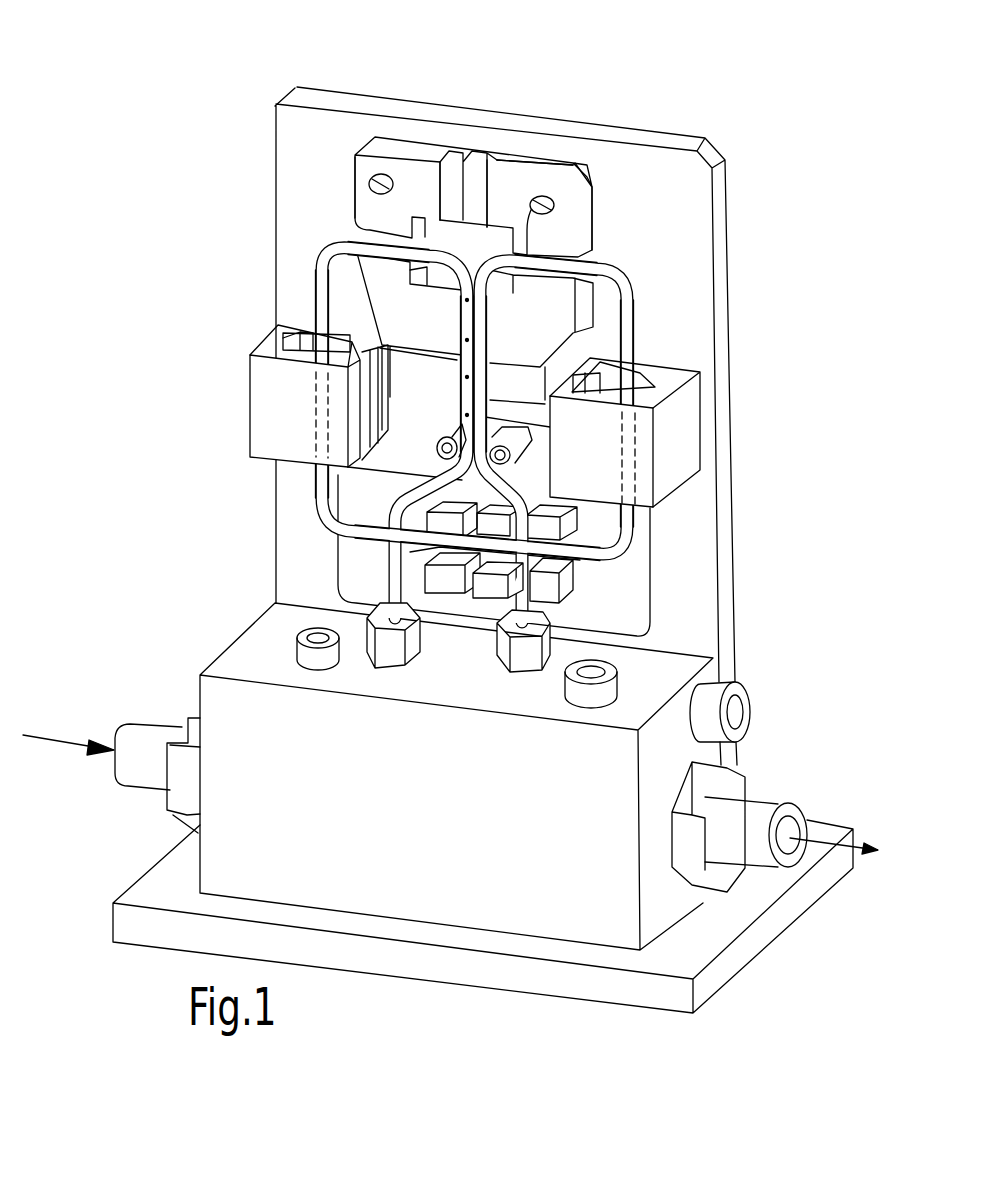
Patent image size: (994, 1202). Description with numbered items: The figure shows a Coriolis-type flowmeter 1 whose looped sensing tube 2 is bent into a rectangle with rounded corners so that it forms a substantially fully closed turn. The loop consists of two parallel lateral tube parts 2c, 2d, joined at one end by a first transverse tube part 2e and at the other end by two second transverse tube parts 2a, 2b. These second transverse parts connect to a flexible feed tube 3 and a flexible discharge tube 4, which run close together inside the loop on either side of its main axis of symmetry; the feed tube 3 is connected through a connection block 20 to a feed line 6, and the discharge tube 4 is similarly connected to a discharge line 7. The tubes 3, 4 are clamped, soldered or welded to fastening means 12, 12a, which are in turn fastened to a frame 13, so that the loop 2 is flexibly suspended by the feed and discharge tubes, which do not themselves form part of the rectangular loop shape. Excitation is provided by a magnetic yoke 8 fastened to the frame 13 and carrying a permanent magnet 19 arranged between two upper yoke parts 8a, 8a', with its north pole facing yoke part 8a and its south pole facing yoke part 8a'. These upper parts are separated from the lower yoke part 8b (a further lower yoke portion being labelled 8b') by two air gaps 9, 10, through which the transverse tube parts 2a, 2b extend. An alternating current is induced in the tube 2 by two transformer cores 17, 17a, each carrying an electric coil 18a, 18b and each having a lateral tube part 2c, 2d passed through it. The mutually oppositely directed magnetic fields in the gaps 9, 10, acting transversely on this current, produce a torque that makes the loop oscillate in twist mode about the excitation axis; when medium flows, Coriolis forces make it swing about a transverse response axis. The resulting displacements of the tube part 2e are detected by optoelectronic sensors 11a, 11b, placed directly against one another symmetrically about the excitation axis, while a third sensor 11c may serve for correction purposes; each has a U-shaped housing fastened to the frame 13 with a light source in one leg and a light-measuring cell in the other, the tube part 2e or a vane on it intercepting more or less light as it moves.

The flowmeter 1 is at (706, 120).
The looped sensing tube 2 is at (482, 371).
The second transverse tube part 2a is at (452, 305).
The second transverse tube part 2b is at (597, 250).
The lateral tube part 2c is at (322, 480).
The lateral tube part 2d is at (635, 522).
The first transverse tube part 2e is at (377, 530).
The feed tube 3 is at (357, 324).
The discharge tube 4 is at (488, 322).
The feed line 6 is at (148, 742).
The discharge line 7 is at (710, 707).
The magnetic yoke 8 is at (377, 135).
The upper yoke part 8a is at (539, 134).
The upper yoke part 8a' is at (539, 134).
The lower yoke part 8b is at (281, 213).
The holder extension 8b' is at (274, 226).
The air gap 9 is at (372, 176).
The air gap 10 is at (532, 199).
The first sensor 11a is at (437, 578).
The second sensor 11b is at (540, 578).
The third sensor 11c is at (600, 580).
The fastening means 12 is at (460, 422).
The clamp 12a is at (488, 435).
The frame 13 is at (652, 124).
The transformer core 17 is at (257, 389).
The transformer core 17a is at (705, 428).
The electric coil 18a is at (315, 318).
The electric coil 18b is at (590, 350).
The permanent magnet 19 is at (468, 150).
The connection block 20 is at (673, 667).